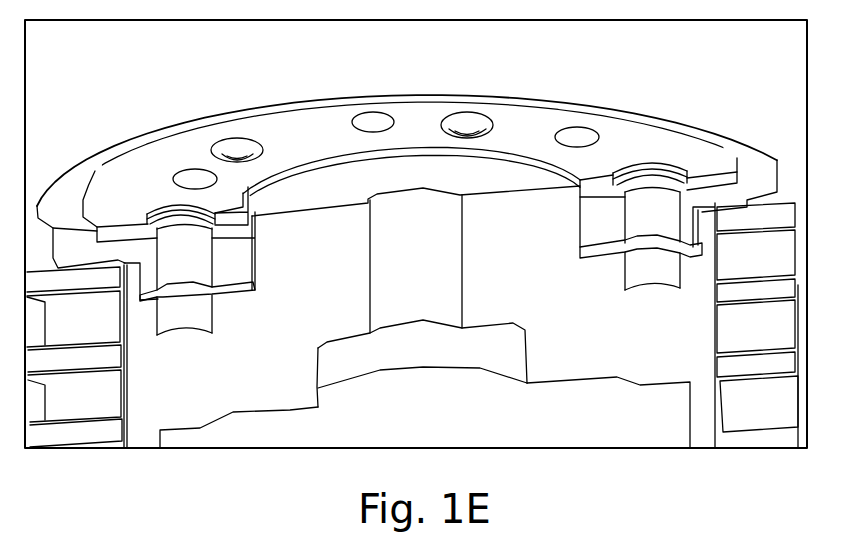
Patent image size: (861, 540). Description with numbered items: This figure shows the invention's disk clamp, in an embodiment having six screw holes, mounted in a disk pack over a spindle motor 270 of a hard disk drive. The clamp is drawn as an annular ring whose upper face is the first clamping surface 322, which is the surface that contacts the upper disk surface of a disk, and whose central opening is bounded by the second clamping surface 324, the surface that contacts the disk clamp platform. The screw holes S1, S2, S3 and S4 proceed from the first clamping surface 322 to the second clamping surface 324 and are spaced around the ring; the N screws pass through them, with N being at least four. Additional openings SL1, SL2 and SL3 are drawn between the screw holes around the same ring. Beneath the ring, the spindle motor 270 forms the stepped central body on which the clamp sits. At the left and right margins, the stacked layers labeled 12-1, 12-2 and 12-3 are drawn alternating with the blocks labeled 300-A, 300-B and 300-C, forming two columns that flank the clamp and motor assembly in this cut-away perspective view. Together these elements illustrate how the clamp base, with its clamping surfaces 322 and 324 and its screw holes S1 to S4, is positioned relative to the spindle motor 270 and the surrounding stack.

The first clamping surface 322 is at (67, 163).
The second clamping surface 324 is at (303, 158).
The spindle motor 270 is at (323, 316).
The screw hole S1 is at (173, 202).
The screw hole S2 is at (249, 144).
The screw hole S3 is at (473, 113).
The screw hole S4 is at (659, 155).
The slot 1 SL1 is at (202, 171).
The slot 2 SL2 is at (353, 130).
The slot 3 SL3 is at (557, 135).
The layer 12-1 is at (411, 325).
The layer 12-2 is at (411, 325).
The layer 12-3 is at (412, 399).
The device 300-A is at (411, 288).
The device 300-B is at (411, 361).
The device 300-C is at (759, 366).